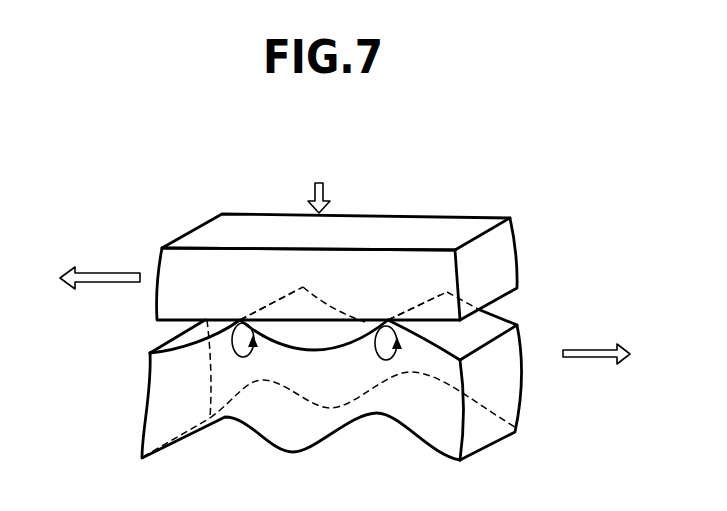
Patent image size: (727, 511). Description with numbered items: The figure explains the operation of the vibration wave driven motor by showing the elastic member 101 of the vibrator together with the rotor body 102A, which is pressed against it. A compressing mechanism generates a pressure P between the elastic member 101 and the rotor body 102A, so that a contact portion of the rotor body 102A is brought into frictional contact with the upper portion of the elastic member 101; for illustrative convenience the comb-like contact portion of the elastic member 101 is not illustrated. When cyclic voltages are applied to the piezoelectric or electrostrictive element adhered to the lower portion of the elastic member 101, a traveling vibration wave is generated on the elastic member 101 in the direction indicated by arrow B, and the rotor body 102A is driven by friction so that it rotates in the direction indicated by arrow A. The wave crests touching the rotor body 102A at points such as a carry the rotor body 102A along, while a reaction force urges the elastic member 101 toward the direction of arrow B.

The rotor body 102A is at (438, 230).
The elastic member 101 is at (512, 410).
The contact point / bending portion a is at (240, 336).
The pressure P is at (319, 179).
The arrow A is at (85, 277).
The arrow B is at (607, 354).